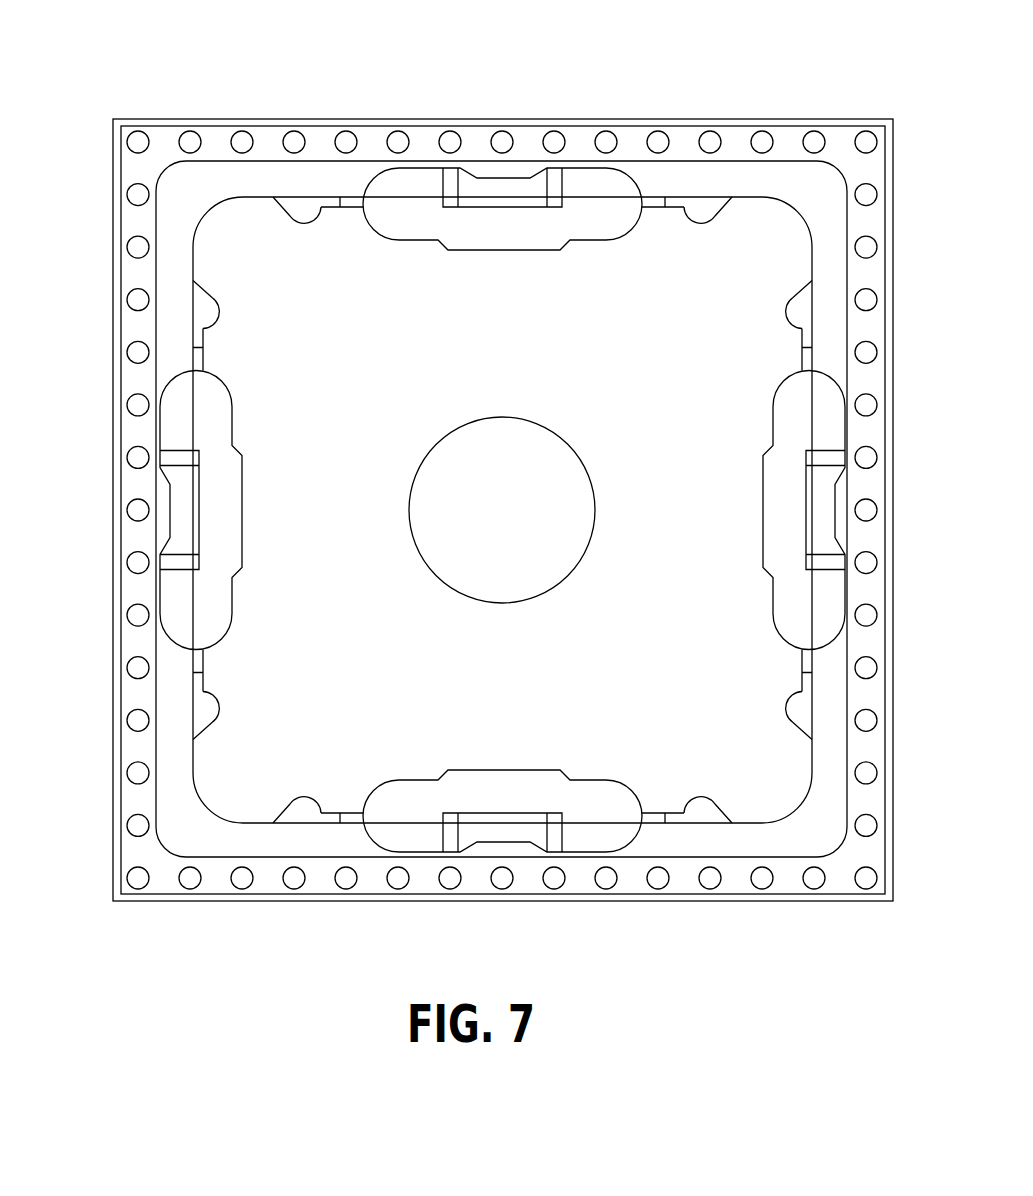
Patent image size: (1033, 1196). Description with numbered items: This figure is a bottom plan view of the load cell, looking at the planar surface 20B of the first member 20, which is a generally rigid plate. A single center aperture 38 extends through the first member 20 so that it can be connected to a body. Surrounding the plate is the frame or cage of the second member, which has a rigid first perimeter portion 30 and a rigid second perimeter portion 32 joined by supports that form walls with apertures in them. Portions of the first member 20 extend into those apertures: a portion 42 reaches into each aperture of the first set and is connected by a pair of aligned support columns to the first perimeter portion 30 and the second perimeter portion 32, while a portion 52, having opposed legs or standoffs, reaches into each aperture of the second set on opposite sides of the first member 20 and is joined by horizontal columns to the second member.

The first member 20 is at (715, 342).
The planar surface 20B is at (677, 499).
The first perimeter portion 30 is at (700, 212).
The second perimeter portion 32 is at (788, 119).
The center aperture 38 is at (512, 417).
The portion of the first member 42 is at (293, 212).
The portion of the first member 52 is at (332, 206).